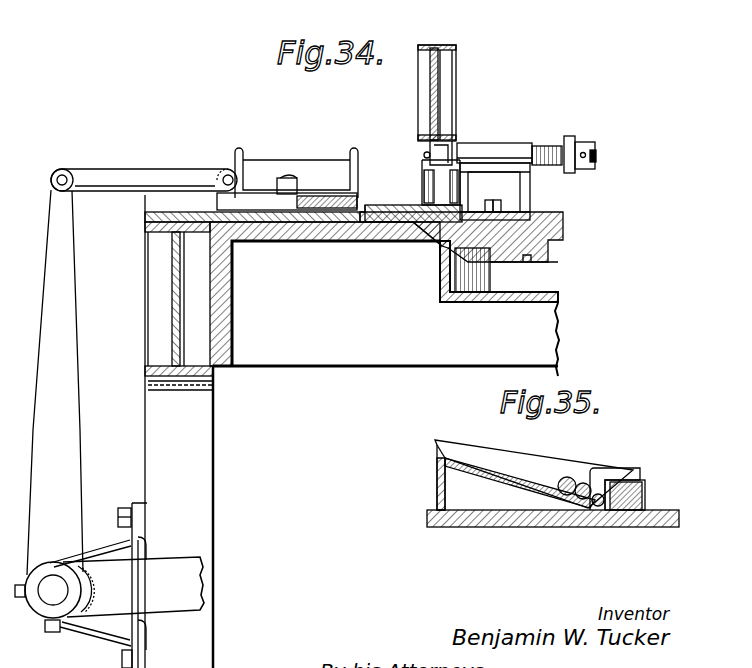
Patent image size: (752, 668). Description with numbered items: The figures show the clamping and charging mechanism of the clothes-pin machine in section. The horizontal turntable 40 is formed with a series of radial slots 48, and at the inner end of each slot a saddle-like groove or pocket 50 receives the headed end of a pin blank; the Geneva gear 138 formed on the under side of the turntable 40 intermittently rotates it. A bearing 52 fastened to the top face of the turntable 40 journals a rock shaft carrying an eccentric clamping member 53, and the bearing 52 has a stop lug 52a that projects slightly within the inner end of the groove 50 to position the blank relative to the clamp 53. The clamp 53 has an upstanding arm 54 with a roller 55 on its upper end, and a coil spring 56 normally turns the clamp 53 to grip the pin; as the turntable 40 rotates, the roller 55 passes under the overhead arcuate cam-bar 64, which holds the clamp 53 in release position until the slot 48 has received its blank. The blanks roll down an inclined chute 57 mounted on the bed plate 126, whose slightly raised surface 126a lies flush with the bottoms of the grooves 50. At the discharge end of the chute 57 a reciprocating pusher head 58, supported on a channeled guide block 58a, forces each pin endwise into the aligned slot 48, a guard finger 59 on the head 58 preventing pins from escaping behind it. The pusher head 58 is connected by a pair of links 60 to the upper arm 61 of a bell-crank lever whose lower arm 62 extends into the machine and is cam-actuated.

In FIG. 34, the turntable 40 is at (560, 218).
In FIG. 34, the radial slot 48 is at (392, 243).
In FIG. 34, the radial groove or pocket 50 is at (420, 210).
In FIG. 34, the bearing 52 is at (500, 150).
In FIG. 34, the stop lug 52a is at (470, 208).
In FIG. 34, the eccentric clamping member 53 is at (437, 162).
In FIG. 34, the upstanding arm 54 is at (460, 143).
In FIG. 34, the roller 55 is at (445, 130).
In FIG. 34, the coil spring 56 is at (545, 150).
In FIG. 34, the inclined chute 57 is at (318, 172).
In FIG. 35, the inclined chute 57 is at (486, 462).
In FIG. 34, the reciprocating pusher head 58 is at (260, 193).
In FIG. 35, the reciprocating pusher head 58 is at (595, 480).
In FIG. 35, the channeled guide block 58a is at (645, 500).
In FIG. 35, the guard finger 59 is at (607, 474).
In FIG. 34, the links 60 is at (144, 169).
In FIG. 34, the upper arm 61 is at (70, 338).
In FIG. 34, the lower arm 62 is at (109, 585).
In FIG. 34, the arcuate cam-bar 64 is at (450, 64).
In FIG. 34, the bed plate 126 is at (348, 356).
In FIG. 35, the bed plate 126 is at (455, 527).
In FIG. 34, the raised pin-blank-supporting surface 126a is at (330, 232).
In FIG. 34, the Geneva gear 138 is at (498, 270).